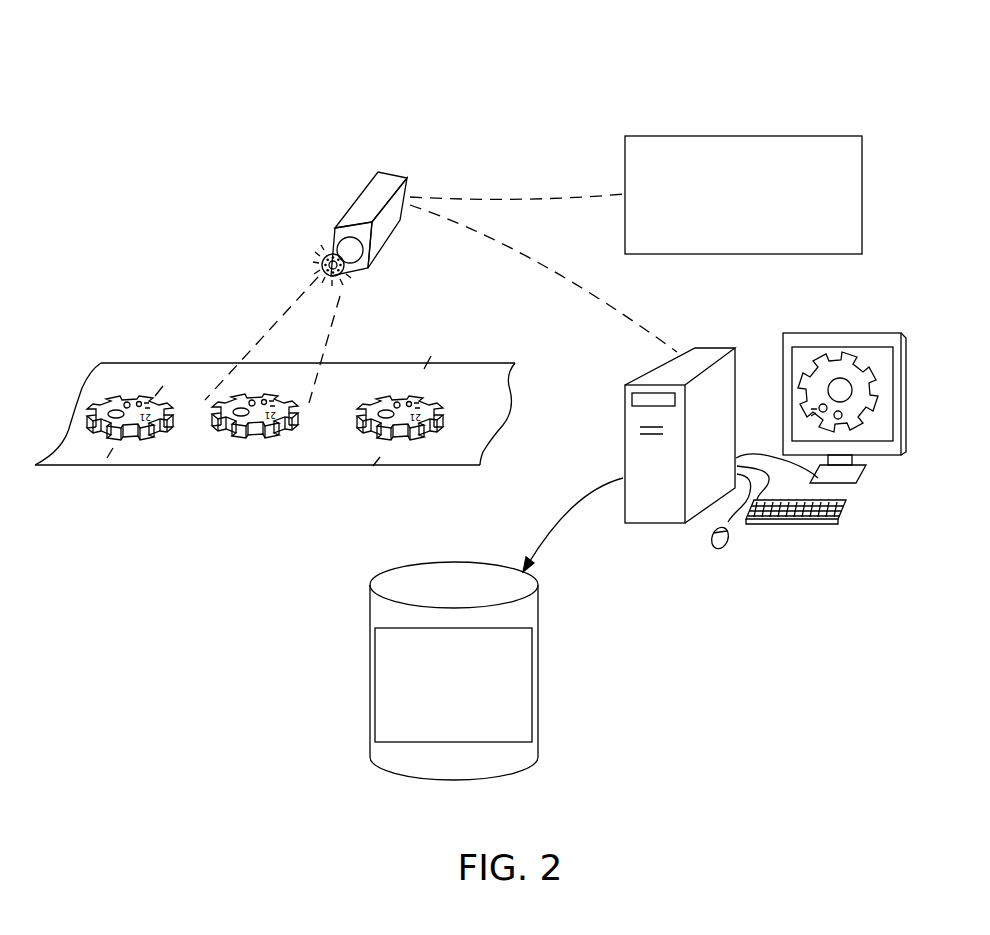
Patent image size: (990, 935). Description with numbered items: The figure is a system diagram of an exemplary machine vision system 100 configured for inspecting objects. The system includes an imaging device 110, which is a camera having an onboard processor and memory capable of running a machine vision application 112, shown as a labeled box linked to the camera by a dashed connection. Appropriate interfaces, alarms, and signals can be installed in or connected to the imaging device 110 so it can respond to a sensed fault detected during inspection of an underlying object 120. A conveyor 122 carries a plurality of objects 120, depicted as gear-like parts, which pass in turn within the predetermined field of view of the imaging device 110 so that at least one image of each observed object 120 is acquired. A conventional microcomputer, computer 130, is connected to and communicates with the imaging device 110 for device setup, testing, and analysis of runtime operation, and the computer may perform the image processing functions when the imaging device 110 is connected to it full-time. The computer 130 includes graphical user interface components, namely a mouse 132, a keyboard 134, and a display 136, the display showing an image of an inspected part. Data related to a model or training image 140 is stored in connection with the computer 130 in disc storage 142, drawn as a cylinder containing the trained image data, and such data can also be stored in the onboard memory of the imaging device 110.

The machine vision system 100 is at (645, 96).
The imaging device 110 is at (355, 198).
The machine vision application 112 is at (690, 138).
The object 120 is at (138, 392).
The conveyor 122 is at (172, 467).
The computer 130 is at (712, 350).
The mouse 132 is at (730, 540).
The keyboard 134 is at (817, 525).
The display 136 is at (903, 398).
The training image 140 is at (527, 670).
The disc storage 142 is at (537, 612).